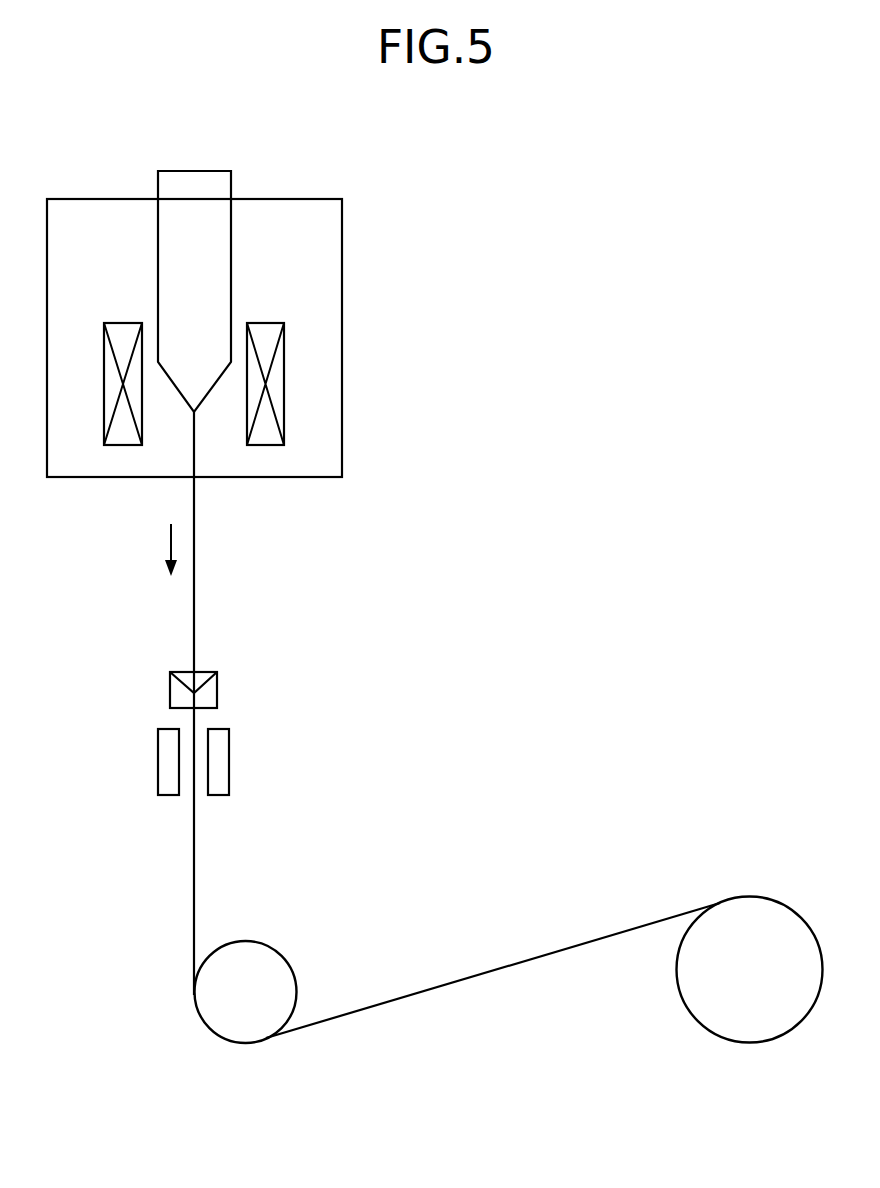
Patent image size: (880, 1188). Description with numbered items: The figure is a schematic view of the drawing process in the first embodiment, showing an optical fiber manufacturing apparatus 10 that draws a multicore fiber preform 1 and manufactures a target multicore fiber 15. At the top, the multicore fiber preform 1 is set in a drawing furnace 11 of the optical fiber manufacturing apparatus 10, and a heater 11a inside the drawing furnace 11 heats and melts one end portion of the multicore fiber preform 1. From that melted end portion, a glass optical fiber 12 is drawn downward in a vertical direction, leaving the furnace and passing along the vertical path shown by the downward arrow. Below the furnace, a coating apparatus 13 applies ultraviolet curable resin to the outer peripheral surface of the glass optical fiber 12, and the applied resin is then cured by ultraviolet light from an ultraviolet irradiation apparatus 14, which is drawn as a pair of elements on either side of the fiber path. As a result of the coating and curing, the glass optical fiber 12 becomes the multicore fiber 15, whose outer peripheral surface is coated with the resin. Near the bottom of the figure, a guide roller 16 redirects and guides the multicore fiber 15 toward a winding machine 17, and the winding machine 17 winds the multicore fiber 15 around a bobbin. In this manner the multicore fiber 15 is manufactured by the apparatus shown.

The multicore fiber preform 1 is at (195, 171).
The optical fiber manufacturing apparatus 10 is at (520, 239).
The drawing furnace 11 is at (352, 267).
The heater 11a is at (284, 382).
The glass optical fiber 12 is at (194, 572).
The coating apparatus 13 is at (217, 688).
The ultraviolet irradiation apparatus 14 is at (229, 755).
The multicore fiber 15 is at (194, 865).
The guide roller 16 is at (252, 941).
The winding machine 17 is at (760, 897).